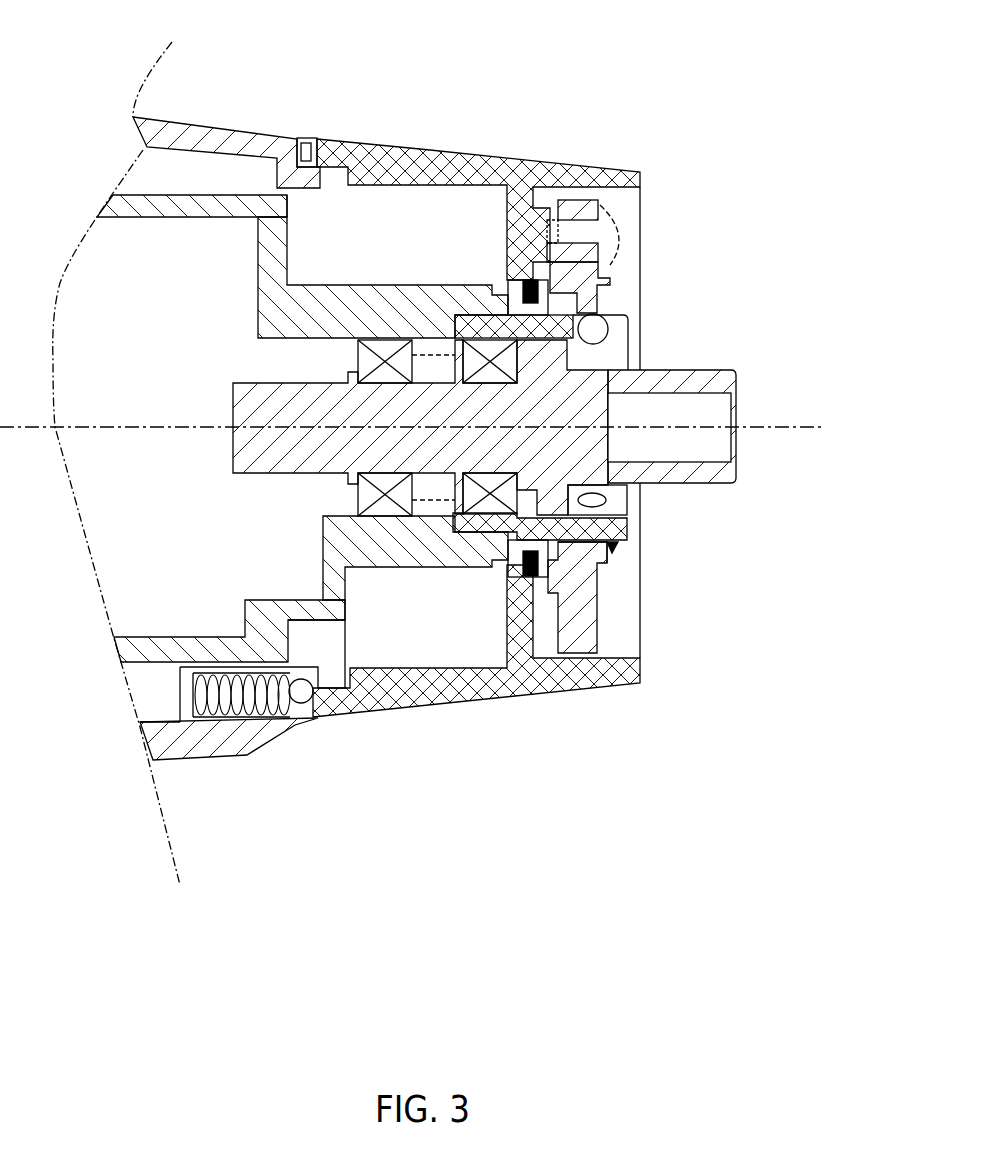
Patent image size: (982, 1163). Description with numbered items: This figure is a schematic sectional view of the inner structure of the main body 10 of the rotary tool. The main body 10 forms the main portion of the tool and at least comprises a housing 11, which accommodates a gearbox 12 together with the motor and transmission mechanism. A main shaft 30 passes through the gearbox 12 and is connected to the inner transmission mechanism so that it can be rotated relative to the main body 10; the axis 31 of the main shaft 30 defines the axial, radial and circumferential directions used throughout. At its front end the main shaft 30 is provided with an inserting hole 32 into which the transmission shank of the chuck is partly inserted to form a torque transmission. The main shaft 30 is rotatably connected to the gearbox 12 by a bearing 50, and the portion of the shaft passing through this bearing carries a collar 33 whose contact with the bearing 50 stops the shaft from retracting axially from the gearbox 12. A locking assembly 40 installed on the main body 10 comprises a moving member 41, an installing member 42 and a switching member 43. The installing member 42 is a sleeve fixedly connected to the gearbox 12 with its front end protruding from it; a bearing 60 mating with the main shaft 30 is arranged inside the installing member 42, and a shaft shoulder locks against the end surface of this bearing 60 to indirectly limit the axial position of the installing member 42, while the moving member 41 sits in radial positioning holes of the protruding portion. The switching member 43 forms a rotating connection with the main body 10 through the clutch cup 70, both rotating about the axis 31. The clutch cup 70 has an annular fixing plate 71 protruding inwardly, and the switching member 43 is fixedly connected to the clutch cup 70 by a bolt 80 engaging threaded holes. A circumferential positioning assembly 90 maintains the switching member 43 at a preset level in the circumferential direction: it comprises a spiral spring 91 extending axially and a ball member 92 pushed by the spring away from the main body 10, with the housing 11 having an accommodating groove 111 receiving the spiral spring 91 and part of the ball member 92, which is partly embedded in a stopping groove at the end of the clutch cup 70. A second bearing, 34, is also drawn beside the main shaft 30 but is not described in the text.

The main body 10 is at (167, 117).
The housing 11 is at (230, 143).
The gearbox 12 is at (175, 209).
The main shaft 30 is at (515, 421).
The axis 31 is at (778, 427).
The inserting hole 32 is at (686, 392).
The collar 33 is at (353, 478).
The second bearing 34 is at (528, 373).
The locking assembly 40 is at (608, 268).
The moving member 41 is at (592, 328).
The installing member 42 is at (607, 543).
The switching member 43 is at (590, 597).
The bearing 50 is at (385, 513).
The bearing 60 is at (487, 513).
The clutch cup 70 is at (530, 687).
The fixing plate 71 is at (315, 138).
The bolt 80 is at (580, 233).
The circumferential positioning assembly 90 is at (248, 705).
The spiral spring 91 is at (293, 690).
The ball member 92 is at (303, 710).
The accommodating groove 111 is at (210, 728).